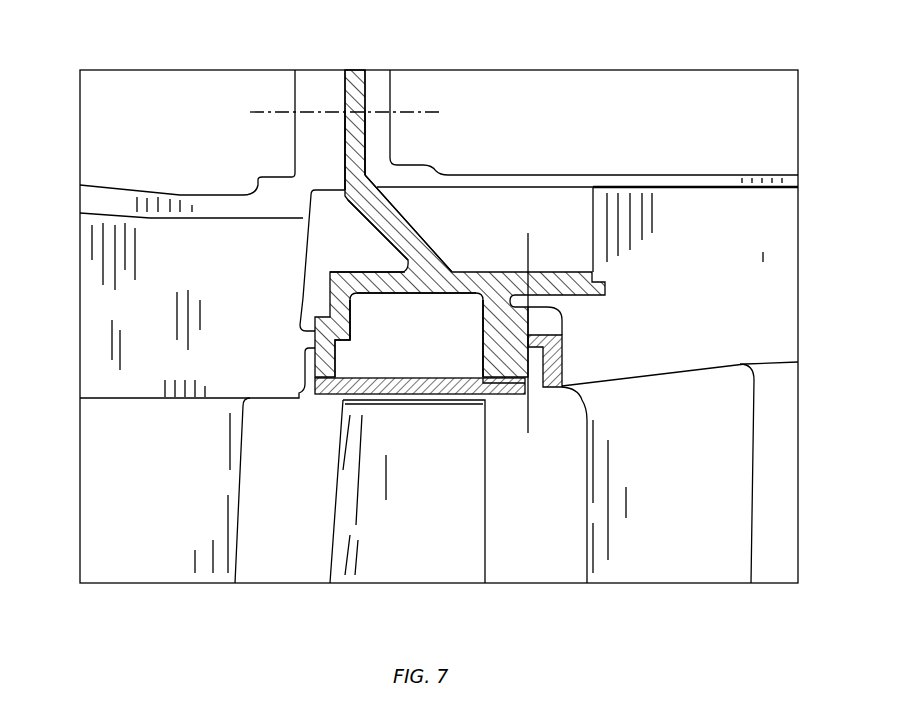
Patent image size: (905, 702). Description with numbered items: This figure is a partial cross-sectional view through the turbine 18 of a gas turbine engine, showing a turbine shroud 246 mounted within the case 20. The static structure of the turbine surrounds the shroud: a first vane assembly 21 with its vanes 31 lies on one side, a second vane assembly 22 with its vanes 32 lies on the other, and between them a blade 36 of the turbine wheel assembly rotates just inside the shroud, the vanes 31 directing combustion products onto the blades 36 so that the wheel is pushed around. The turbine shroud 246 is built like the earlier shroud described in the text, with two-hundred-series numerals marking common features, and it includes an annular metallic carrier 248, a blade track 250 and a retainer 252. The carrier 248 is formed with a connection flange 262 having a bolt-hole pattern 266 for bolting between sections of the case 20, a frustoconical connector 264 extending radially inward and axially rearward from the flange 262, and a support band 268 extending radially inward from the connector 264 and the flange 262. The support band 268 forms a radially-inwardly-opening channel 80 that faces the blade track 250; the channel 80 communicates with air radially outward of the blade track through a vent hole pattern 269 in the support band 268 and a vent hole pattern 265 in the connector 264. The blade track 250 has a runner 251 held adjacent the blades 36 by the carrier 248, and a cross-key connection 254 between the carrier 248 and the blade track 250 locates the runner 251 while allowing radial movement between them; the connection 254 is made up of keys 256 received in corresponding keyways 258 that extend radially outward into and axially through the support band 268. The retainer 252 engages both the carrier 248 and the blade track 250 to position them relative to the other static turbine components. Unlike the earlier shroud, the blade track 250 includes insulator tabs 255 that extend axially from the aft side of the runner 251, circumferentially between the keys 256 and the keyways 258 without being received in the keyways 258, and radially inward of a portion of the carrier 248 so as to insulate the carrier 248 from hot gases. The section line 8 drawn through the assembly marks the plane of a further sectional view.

The turbine 18 is at (671, 106).
The case 20 is at (714, 180).
The static turbine vane assembly 21 is at (79, 503).
The static turbine vane assembly 22 is at (764, 502).
The vanes 31 is at (123, 525).
The vanes 32 is at (719, 568).
The blades 36 is at (273, 510).
The radially-inwardly-opening channel 80 is at (431, 348).
The turbine shroud 246 is at (459, 233).
The annular metallic carrier 248 is at (410, 199).
The blade track 250 is at (393, 366).
The runner 251 is at (307, 387).
The retainer 252 is at (567, 342).
The cross-key connection 254 is at (538, 395).
The insulator tabs 255 is at (493, 400).
The keys 256 is at (529, 382).
The keyways 258 is at (453, 386).
The connection flange 262 is at (370, 142).
The connector 264 is at (331, 200).
The vent hole pattern 265 is at (385, 215).
The bolt-hole pattern 266 is at (366, 103).
The support band 268 is at (343, 265).
The vent hole pattern 269 is at (386, 276).
The section line 8- 8 is at (502, 247).